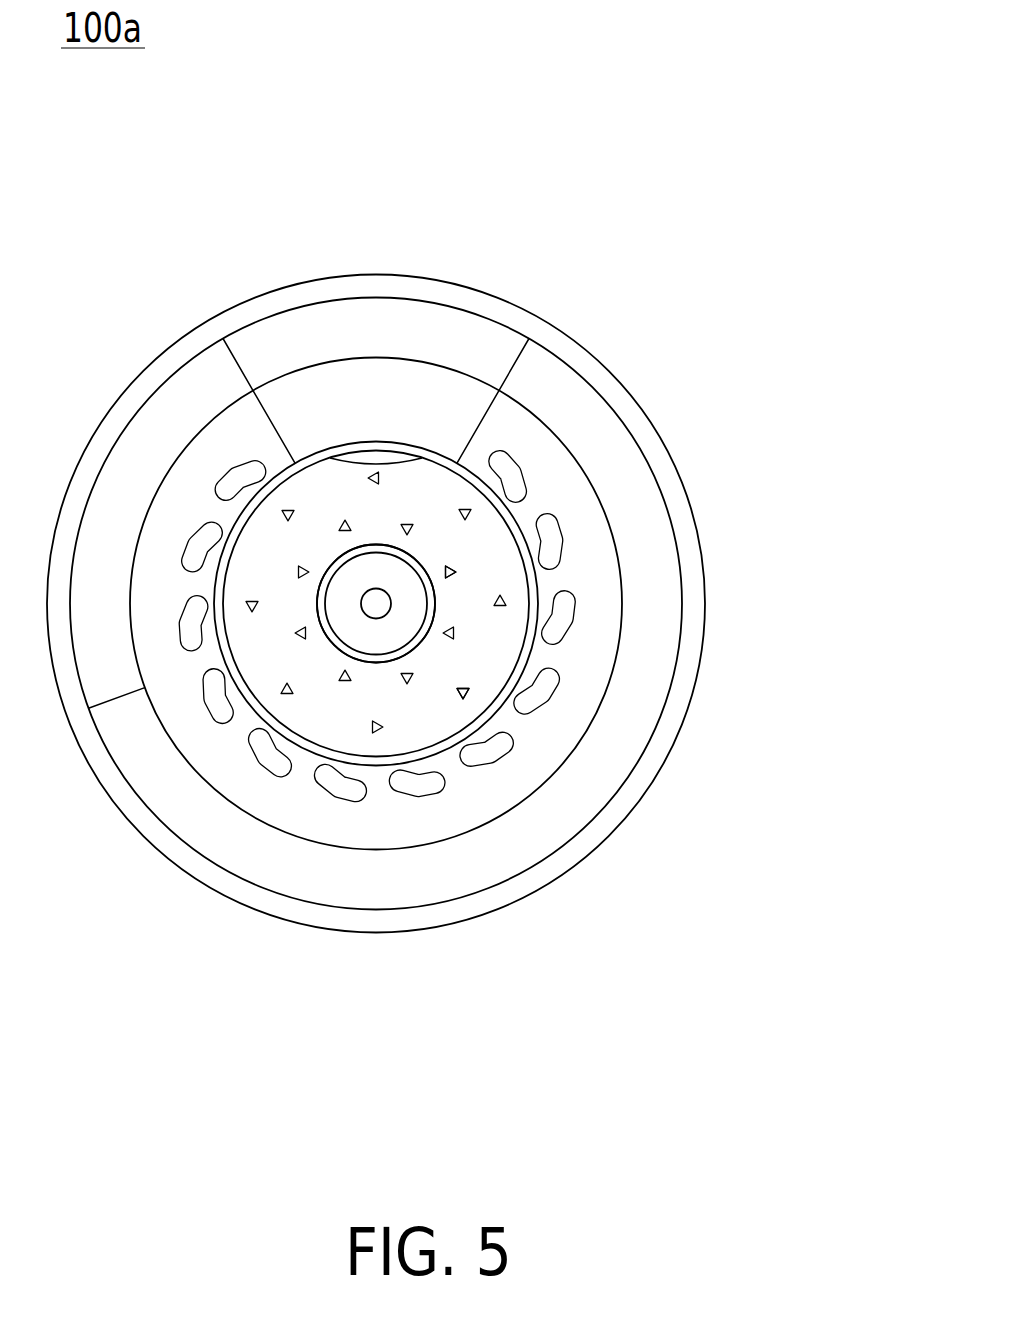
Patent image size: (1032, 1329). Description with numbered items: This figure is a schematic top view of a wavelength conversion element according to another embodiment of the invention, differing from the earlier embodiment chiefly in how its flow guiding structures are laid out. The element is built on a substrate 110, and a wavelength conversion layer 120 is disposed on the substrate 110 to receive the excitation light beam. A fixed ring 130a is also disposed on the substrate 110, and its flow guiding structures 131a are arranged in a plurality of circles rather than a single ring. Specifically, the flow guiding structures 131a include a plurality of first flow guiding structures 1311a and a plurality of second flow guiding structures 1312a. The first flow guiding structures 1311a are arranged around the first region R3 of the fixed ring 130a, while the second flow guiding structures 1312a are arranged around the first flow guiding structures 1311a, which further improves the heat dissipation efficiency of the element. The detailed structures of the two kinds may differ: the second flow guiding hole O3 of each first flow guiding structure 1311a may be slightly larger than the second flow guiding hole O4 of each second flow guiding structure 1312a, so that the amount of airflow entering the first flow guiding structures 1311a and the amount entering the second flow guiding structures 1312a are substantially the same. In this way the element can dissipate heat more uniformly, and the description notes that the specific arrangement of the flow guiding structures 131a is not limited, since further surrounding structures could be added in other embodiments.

The substrate 110 is at (618, 378).
The wavelength conversion layer 120 is at (630, 483).
The fixed ring 130a is at (530, 538).
The flow guiding structures 131a is at (573, 666).
The first flow guiding structures 1311a is at (463, 637).
The second flow guiding structures 1312a is at (462, 693).
The second flow guiding hole of the first flow guiding structure O3 is at (465, 709).
The second flow guiding hole of the second flow guiding structure O4 is at (467, 578).
The first region R3 is at (367, 662).